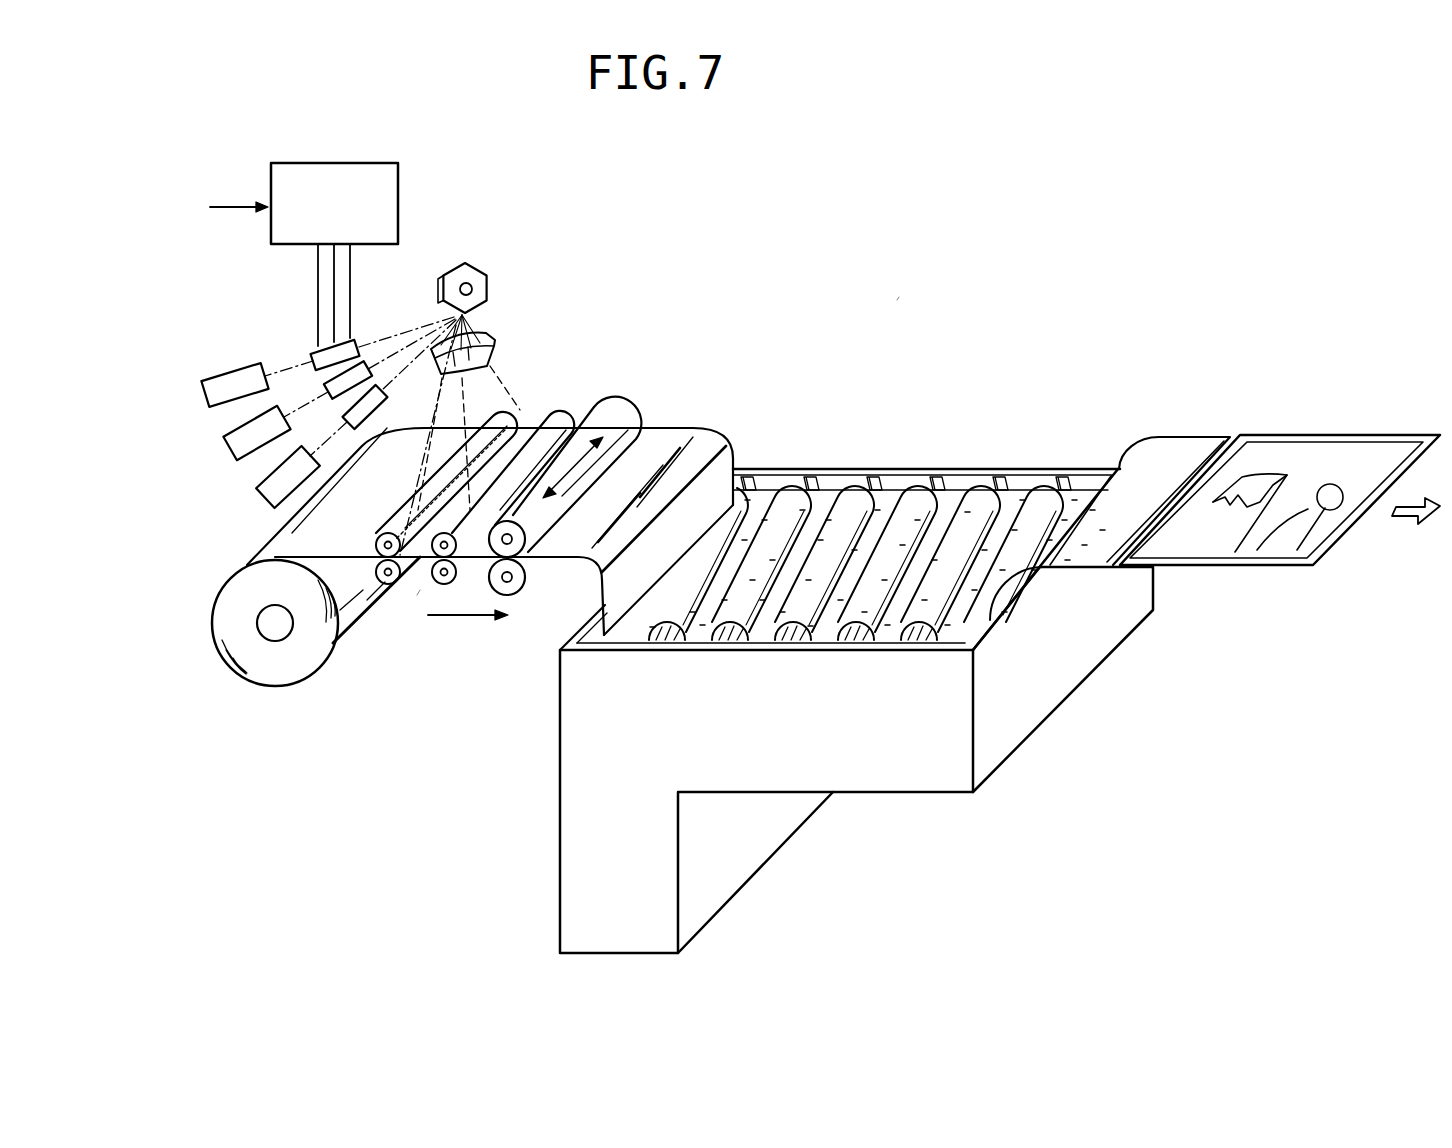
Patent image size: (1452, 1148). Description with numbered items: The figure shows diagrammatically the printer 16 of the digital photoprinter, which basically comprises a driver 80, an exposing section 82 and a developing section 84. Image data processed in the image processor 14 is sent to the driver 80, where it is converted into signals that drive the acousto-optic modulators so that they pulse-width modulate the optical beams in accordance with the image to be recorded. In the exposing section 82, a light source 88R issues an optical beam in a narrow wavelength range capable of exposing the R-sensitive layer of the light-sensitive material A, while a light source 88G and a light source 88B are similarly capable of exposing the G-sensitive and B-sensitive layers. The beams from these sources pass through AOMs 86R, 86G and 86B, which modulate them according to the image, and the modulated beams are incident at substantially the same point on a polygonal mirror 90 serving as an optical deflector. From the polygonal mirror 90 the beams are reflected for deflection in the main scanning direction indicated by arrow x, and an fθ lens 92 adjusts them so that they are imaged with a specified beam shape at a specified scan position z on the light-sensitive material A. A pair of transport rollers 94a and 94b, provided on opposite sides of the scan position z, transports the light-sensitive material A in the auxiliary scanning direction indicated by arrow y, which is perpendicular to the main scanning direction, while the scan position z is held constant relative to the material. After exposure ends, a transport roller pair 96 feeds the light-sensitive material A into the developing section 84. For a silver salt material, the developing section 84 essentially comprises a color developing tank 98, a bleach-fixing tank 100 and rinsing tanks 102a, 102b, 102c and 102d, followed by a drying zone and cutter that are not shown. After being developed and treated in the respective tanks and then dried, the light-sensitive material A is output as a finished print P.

The image processor 14 is at (193, 207).
The driver 80 is at (349, 219).
The AOM 86R is at (313, 353).
The AOM 86G is at (324, 386).
The AOM 86B is at (378, 362).
The light source 88R is at (217, 378).
The light source 88G is at (233, 437).
The light source 88B is at (267, 495).
The polygonal mirror 90 is at (484, 280).
The fθ lens 92 is at (493, 338).
The exposing section 82 is at (655, 293).
The transport roller 94a is at (388, 585).
The transport roller 94b is at (560, 418).
The transport roller pair 96 is at (513, 596).
The developing section 84 is at (895, 641).
The color developing tank 98 is at (753, 497).
The bleach-fixing tank 100 is at (690, 642).
The rinsing tank 102a is at (889, 500).
The rinsing tank 102b is at (823, 637).
The rinsing tank 102c is at (880, 637).
The rinsing tank 102d is at (952, 630).
The printer 16 is at (900, 293).
The light-sensitive material A is at (665, 440).
The print P is at (1217, 552).
The main scanning direction x is at (590, 433).
The auxiliary scanning direction y is at (460, 618).
The scan position z is at (413, 600).